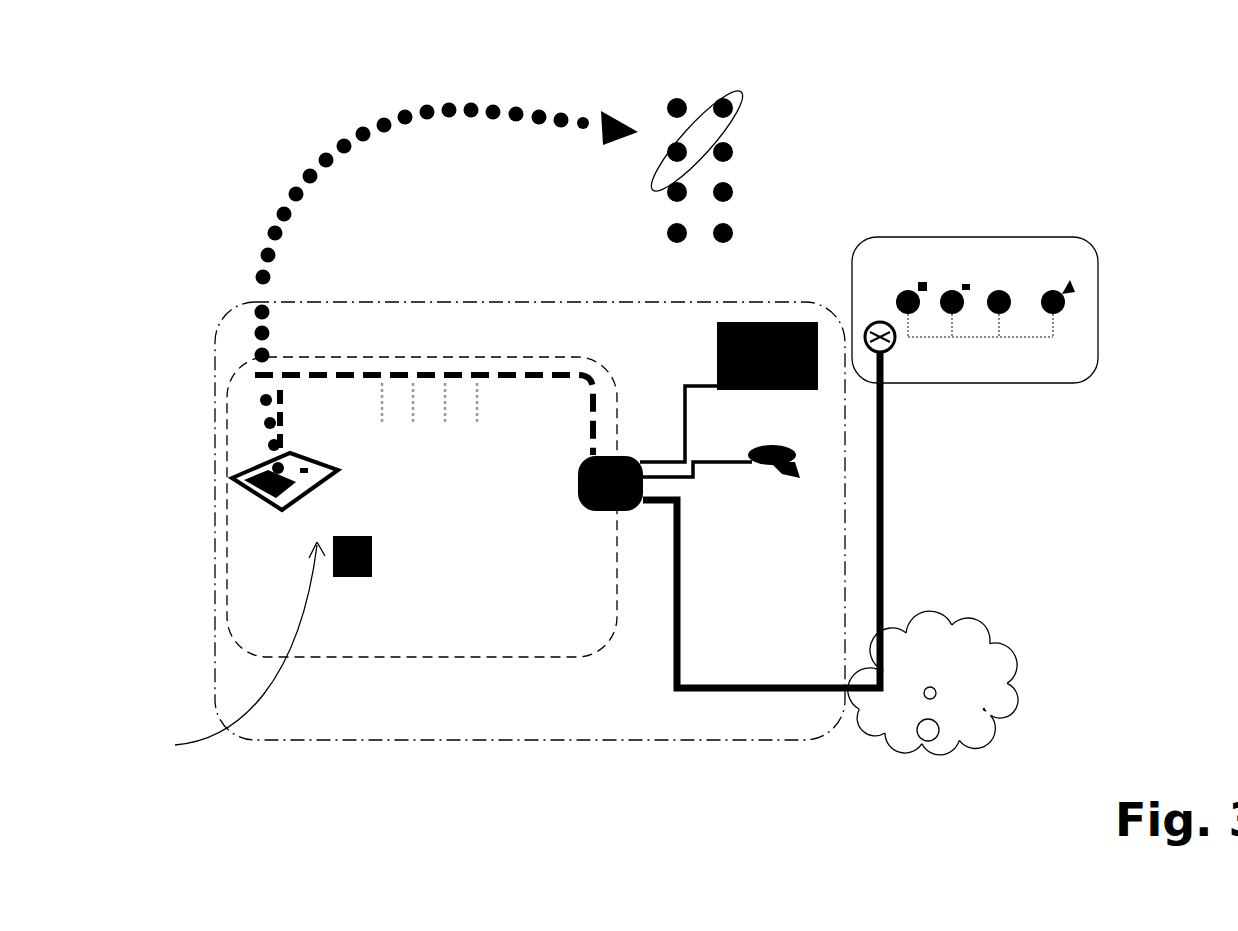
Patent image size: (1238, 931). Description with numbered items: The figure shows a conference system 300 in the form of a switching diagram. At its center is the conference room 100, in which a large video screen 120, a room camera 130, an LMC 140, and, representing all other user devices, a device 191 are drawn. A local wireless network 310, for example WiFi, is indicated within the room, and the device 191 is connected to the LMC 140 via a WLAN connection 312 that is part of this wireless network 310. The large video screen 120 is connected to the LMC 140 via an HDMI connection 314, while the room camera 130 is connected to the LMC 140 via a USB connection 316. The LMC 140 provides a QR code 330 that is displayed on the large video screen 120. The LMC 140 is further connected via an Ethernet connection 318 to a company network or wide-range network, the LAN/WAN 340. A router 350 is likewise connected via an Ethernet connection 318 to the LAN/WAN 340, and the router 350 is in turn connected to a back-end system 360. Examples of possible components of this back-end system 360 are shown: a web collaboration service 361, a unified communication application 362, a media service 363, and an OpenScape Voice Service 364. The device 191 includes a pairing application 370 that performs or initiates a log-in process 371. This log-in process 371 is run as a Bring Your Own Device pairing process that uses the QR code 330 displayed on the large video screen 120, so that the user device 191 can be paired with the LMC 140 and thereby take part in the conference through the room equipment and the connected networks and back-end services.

The conference system 300 is at (225, 156).
The conference room 100 is at (472, 740).
The local wireless network 310 is at (373, 658).
The WLAN connection 312 is at (432, 373).
The log-in process 371 is at (848, 120).
The device 191 is at (252, 472).
The QR code 330 is at (372, 557).
The pairing application 370 is at (226, 652).
The large video screen 120 is at (720, 325).
The HDMI connection 314 is at (685, 390).
The USB connection 316 is at (707, 472).
The LMC 140 is at (578, 490).
The room camera 130 is at (790, 480).
The Ethernet connection 318 is at (687, 693).
The router 350 is at (866, 325).
The back-end system 360 is at (1019, 267).
The web collaboration service 361 is at (905, 290).
The unified communication application 362 is at (952, 290).
The media service 363 is at (1003, 290).
The OpenScape Voice Service 364 is at (1060, 290).
The LAN/WAN 340 is at (978, 623).